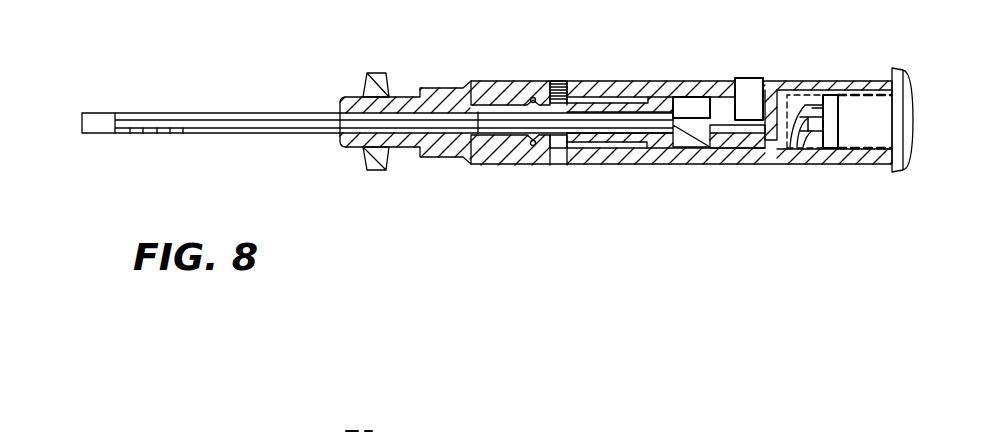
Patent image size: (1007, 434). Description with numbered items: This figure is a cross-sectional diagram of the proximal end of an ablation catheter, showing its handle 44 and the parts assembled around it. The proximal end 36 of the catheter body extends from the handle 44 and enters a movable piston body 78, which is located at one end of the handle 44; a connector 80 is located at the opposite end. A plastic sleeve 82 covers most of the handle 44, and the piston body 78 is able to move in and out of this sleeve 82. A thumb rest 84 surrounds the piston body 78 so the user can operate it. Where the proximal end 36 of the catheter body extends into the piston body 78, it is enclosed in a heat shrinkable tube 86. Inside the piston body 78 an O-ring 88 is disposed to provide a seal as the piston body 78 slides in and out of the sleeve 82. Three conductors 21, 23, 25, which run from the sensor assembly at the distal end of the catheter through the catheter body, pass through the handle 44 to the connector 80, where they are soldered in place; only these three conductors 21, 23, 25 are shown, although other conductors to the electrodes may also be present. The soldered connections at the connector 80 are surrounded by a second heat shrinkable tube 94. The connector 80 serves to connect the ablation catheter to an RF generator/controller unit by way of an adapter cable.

The proximal end of the catheter body 36 is at (335, 88).
The heat shrinkable tube 86 is at (163, 135).
The movable piston body 78 is at (343, 140).
The thumb rest 84 is at (380, 75).
The plastic sleeve 82 is at (498, 80).
The O-ring 88 is at (533, 147).
The handle 44 is at (368, 227).
The heat shrinkable tube 94 is at (812, 93).
The conductor 21 is at (782, 130).
The conductor 23 is at (798, 140).
The conductor 25 is at (822, 140).
The connector 80 is at (880, 112).